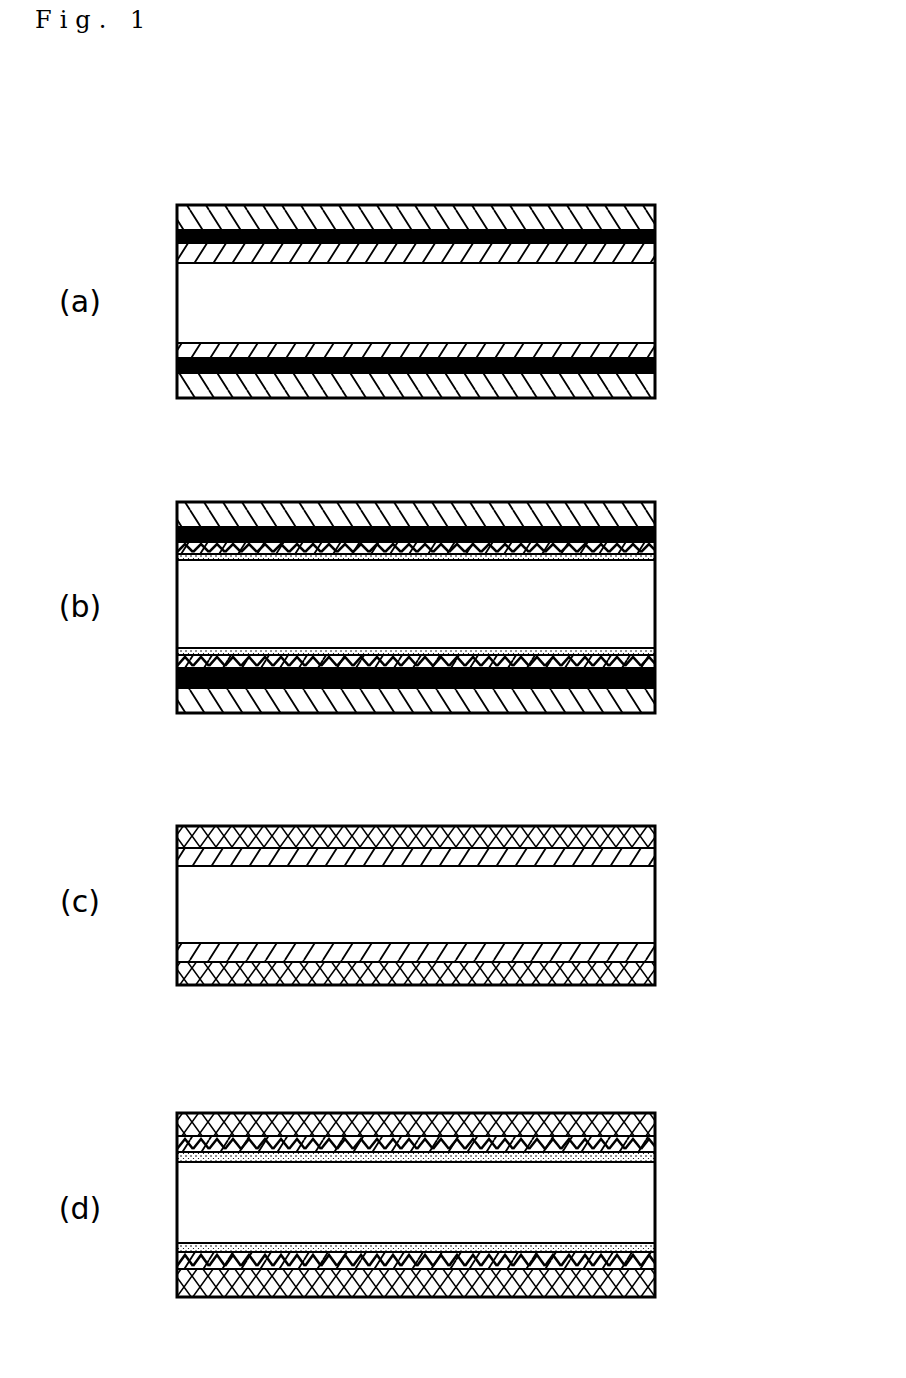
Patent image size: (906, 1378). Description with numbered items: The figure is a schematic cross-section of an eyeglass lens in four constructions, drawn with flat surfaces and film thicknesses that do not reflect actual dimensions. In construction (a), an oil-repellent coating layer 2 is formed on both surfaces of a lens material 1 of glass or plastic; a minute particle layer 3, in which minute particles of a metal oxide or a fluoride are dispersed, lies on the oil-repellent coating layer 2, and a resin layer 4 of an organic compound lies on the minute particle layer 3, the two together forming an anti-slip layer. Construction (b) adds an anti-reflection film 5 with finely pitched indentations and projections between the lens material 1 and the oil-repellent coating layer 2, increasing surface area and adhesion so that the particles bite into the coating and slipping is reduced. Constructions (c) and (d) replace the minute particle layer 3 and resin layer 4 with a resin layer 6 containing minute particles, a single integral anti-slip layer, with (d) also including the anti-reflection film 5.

The lens material 1 is at (655, 302).
The oil-repellent coating layer 2 is at (655, 255).
The minute particle layer 3 is at (655, 236).
The resin layer 4 is at (598, 205).
The anti-reflection film 5 is at (655, 565).
The resin layer containing minute particles 6 is at (618, 826).